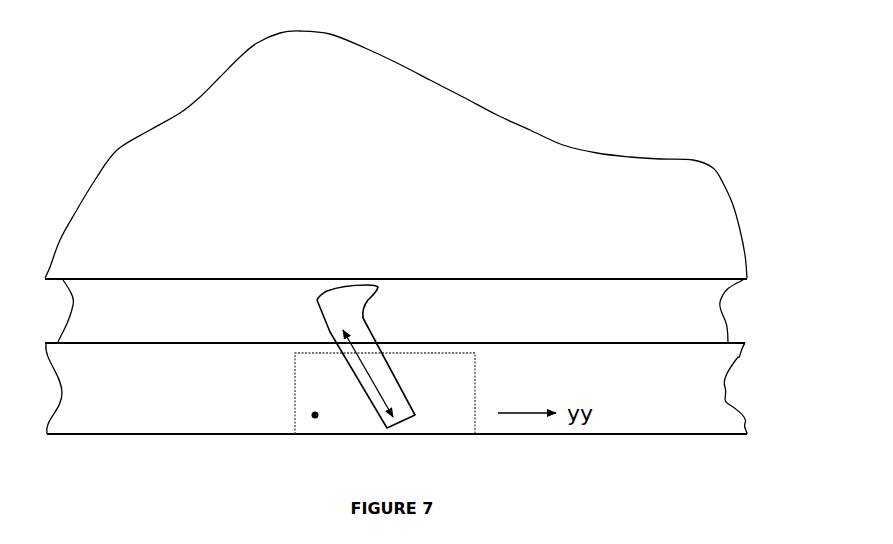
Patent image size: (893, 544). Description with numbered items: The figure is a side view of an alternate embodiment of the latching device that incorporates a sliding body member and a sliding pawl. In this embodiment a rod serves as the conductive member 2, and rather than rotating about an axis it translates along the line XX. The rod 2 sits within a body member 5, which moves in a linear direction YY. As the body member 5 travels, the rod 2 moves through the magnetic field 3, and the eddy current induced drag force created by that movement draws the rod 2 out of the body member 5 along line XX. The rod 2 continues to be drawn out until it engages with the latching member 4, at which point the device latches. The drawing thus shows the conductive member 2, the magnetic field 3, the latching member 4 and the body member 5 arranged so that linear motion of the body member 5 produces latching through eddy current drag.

The conductive member 2 is at (328, 330).
The magnetic field 3 is at (400, 311).
The latching member 4 is at (396, 155).
The body member 5 is at (315, 415).